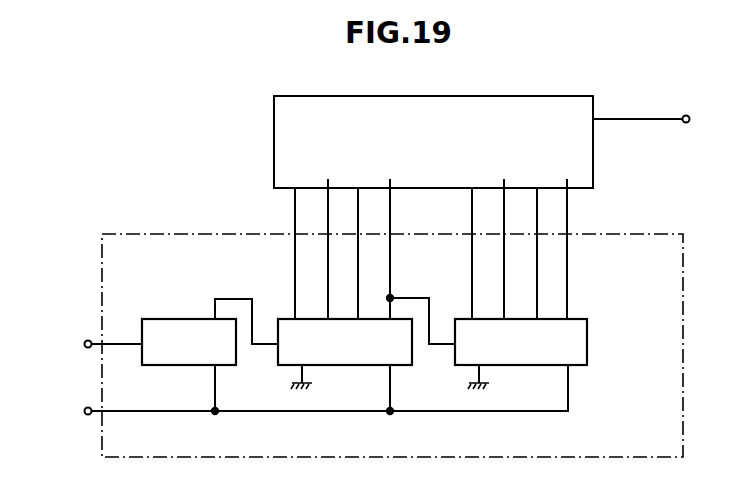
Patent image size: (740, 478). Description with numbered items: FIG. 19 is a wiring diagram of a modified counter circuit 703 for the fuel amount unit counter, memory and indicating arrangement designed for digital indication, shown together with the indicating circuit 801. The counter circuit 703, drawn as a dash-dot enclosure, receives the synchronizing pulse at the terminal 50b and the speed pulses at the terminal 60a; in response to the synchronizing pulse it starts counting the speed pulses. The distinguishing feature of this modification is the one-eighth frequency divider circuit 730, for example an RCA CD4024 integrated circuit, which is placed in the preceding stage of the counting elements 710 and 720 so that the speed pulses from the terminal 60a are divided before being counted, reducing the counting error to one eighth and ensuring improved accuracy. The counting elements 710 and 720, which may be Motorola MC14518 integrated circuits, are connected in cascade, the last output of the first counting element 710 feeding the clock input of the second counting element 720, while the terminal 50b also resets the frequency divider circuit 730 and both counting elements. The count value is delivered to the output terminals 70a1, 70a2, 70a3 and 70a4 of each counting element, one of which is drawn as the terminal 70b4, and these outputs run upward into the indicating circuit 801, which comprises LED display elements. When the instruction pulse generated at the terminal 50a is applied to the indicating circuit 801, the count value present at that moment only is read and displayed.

The indicating circuit 801 is at (530, 96).
The terminal 50a is at (686, 115).
The terminal 50b is at (85, 413).
The terminal 60a is at (85, 341).
The counter circuit 703 is at (683, 318).
The one-eighth frequency divider circuit 730 is at (190, 319).
The counting element 710 is at (291, 319).
The counting element 720 is at (598, 311).
The terminal 70a1 is at (295, 188).
The terminal 70a2 is at (413, 237).
The terminal 70a3 is at (358, 188).
The terminal 70a4 is at (567, 237).
The output line Q4 of first counter 70b4 is at (394, 237).